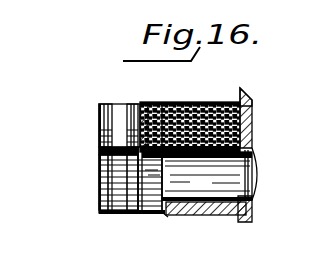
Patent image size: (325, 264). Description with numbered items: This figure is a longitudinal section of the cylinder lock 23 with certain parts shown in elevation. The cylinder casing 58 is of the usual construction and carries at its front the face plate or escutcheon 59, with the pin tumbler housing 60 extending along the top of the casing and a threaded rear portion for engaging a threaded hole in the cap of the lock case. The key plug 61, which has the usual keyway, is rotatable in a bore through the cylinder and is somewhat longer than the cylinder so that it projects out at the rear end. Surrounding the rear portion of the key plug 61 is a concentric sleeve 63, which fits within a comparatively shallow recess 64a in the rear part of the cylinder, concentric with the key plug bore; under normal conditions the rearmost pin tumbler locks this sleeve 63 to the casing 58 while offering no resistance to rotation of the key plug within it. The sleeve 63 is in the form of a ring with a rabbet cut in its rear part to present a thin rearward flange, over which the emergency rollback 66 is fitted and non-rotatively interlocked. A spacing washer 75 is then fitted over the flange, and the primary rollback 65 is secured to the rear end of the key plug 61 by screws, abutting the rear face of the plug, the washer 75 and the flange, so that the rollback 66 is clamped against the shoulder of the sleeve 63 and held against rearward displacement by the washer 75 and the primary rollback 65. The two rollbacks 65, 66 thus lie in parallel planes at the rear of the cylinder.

The cylinder lock 23 is at (241, 86).
The cylinder casing 58 is at (220, 218).
The face plate or escutcheon 59 is at (253, 115).
The pin tumbler housing 60 is at (185, 101).
The key plug 61 is at (222, 175).
The sleeve 63 is at (146, 205).
The recess 64a is at (167, 217).
The rollback 65 is at (100, 113).
The rollback 66 is at (135, 102).
The spacing washer 75 is at (118, 215).